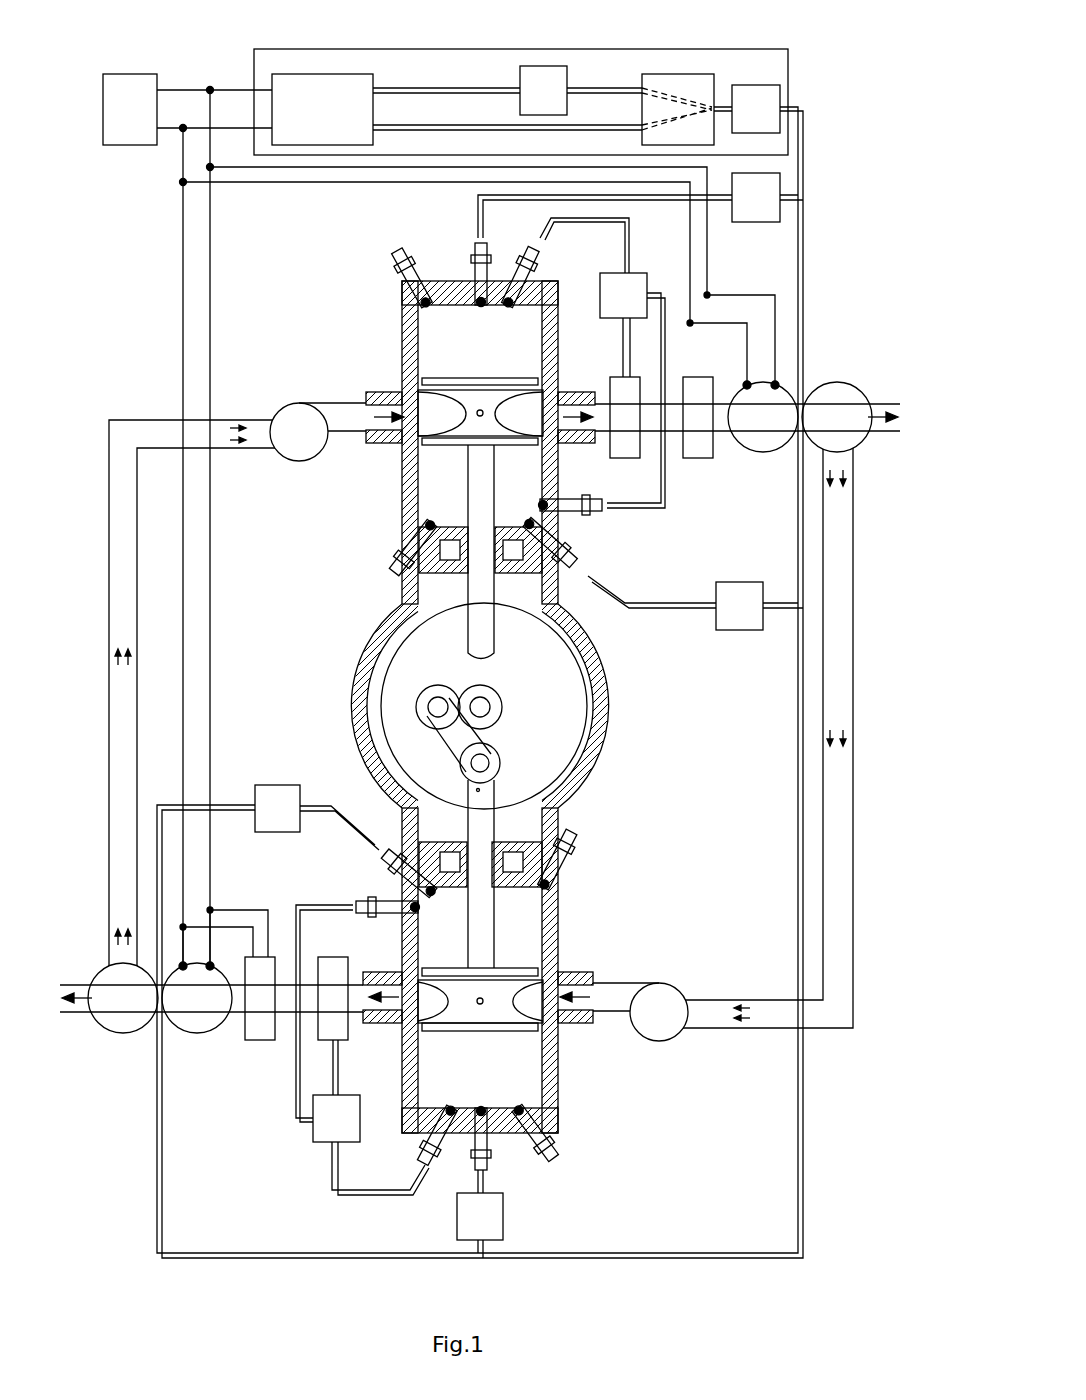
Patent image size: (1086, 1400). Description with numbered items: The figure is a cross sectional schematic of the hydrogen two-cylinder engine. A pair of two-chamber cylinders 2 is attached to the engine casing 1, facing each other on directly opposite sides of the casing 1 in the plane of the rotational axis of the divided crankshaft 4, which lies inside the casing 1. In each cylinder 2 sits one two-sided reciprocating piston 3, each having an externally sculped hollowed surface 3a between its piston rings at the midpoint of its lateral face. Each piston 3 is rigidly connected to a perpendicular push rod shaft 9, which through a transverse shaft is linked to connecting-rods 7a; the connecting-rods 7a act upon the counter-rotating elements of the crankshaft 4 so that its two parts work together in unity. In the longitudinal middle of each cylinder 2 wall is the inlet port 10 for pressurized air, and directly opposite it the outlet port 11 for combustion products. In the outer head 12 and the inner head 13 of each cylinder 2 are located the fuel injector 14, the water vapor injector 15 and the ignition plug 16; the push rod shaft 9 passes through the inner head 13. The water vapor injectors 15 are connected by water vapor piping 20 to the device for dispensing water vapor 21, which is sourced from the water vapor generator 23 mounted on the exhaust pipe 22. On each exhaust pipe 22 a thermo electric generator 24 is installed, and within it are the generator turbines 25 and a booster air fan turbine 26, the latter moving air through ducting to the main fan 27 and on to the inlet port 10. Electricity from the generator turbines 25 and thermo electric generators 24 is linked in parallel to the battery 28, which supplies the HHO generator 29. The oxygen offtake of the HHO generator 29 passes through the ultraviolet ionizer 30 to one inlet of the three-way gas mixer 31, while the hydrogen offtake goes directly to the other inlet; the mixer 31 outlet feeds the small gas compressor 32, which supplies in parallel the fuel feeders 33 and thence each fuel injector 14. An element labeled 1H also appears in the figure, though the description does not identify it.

The engine casing 1 is at (358, 660).
The hydrogen injector 1H is at (565, 550).
The two-chamber cylinder 2 is at (405, 330).
The two-sided reciprocating piston 3 is at (466, 428).
The externally sculped hollowed surface 3a is at (447, 407).
The divided crankshaft 4 is at (568, 728).
The connecting-rod 7a is at (455, 745).
The push rod shaft 9 is at (480, 480).
The inlet port 10 is at (355, 417).
The outlet port 11 is at (567, 398).
The outer head 12 is at (445, 279).
The inner head 13 is at (560, 588).
The fuel injector 14 is at (481, 270).
The water vapor injector 15 is at (522, 273).
The ignition plug 16 is at (415, 278).
The water vapor piping 20 is at (605, 222).
The device for dispensing water vapor 21 is at (631, 295).
The exhaust pipe 22 is at (868, 410).
The water vapor generator 23 is at (620, 448).
The thermo electric generator 24 is at (692, 452).
The generator turbine 25 is at (790, 392).
The booster air fan turbine 26 is at (838, 405).
The main fan 27 is at (293, 422).
The battery 28 is at (116, 80).
The HHO generator 29 is at (312, 90).
The ultraviolet ionizer 30 is at (542, 90).
The three-way gas mixer 31 is at (680, 84).
The small gas compressor 32 is at (760, 98).
The fuel feeder 33 is at (762, 196).